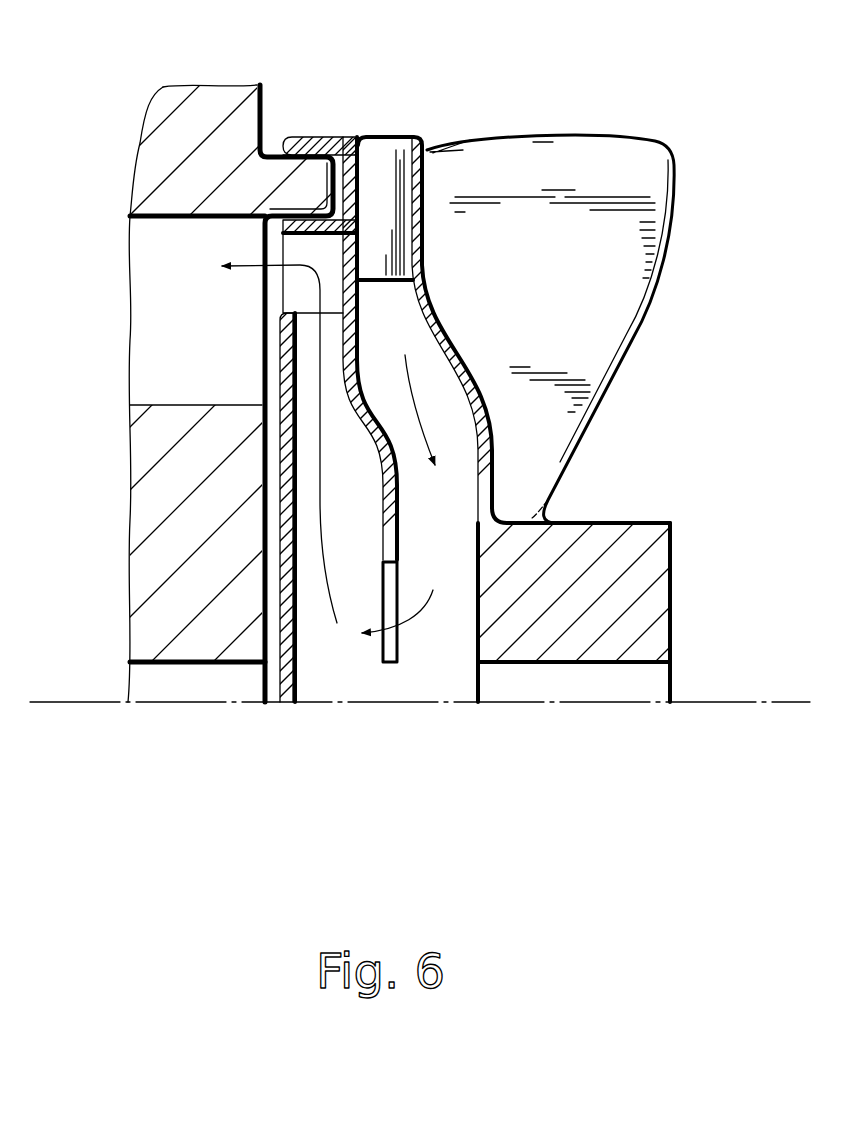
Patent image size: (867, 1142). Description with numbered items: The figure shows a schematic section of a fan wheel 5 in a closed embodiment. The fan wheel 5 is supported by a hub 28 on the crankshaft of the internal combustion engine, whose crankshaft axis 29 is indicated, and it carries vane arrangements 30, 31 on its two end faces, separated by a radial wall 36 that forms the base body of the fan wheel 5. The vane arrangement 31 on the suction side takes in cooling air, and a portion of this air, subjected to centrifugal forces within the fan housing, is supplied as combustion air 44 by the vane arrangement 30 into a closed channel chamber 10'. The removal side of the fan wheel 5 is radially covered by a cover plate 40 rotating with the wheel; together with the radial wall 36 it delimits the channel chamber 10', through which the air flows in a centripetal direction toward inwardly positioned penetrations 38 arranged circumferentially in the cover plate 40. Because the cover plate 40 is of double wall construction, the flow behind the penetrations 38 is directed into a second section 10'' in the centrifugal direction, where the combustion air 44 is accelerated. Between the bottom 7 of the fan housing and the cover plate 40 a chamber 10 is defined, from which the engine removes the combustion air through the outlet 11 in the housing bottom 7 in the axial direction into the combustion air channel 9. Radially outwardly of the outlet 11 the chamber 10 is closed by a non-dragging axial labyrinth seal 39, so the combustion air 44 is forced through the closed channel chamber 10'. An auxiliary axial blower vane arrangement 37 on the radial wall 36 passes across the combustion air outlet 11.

The fan wheel 5 is at (494, 712).
The bottom of the fan housing 7 is at (188, 123).
The combustion air channel 9 is at (142, 327).
The chamber 10 is at (433, 468).
The channel chamber 10' is at (567, 408).
The second section 10'' is at (369, 683).
The combustion air outlet 11 is at (260, 247).
The hub 28 is at (663, 553).
The crankshaft axis 29 is at (768, 700).
The vane arrangement 30 is at (386, 160).
The vane arrangement 31 is at (612, 160).
The radial wall 36 is at (440, 327).
The auxiliary axial blower vane arrangement 37 is at (320, 253).
The penetrations 38 is at (385, 663).
The axial labyrinth seal 39 is at (305, 130).
The cover plate 40 is at (400, 490).
The combustion air 44 is at (390, 150).